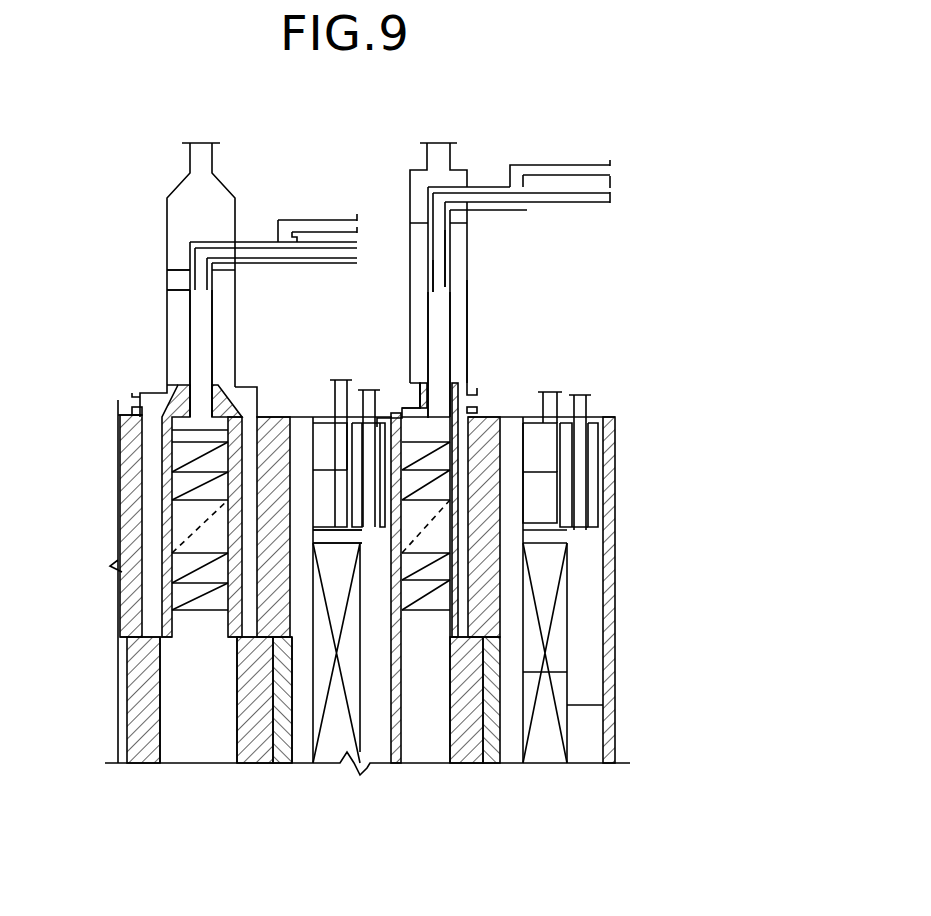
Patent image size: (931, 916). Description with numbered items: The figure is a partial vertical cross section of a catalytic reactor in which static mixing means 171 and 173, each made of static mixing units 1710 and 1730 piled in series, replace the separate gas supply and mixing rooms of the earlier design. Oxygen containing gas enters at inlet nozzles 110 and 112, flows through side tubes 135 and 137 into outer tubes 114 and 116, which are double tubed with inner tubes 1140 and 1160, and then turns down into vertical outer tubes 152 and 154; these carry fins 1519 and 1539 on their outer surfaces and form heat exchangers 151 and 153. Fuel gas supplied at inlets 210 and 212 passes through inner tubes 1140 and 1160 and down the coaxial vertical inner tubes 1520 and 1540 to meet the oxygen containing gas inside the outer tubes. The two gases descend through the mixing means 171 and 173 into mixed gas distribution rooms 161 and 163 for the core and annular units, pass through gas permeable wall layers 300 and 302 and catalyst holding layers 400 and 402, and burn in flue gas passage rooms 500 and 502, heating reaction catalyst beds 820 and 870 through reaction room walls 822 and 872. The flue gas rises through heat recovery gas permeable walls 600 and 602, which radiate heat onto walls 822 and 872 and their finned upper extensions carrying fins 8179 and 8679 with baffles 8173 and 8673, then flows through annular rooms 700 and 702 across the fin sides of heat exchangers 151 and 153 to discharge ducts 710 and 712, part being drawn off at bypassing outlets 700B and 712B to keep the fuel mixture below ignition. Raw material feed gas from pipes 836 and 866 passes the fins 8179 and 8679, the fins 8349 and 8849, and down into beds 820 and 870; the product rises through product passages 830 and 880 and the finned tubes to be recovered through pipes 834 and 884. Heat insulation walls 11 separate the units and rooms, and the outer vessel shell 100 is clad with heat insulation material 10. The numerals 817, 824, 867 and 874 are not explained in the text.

The heat insulation material 10 is at (607, 770).
The outer vessel shell 100 is at (607, 748).
The heat insulation walls 11 is at (152, 462).
The inlet nozzle 110 is at (358, 218).
The inlet nozzle 112 is at (612, 168).
The outer tube 114 is at (248, 242).
The outer tube 116 is at (477, 185).
The inner tube 1140 is at (263, 245).
The inner tube 1160 is at (497, 187).
The side tube 135 is at (322, 220).
The side tube 137 is at (560, 164).
The heat exchanger 151 is at (167, 296).
The vertical outer tube 152 is at (168, 284).
The fins 1519 is at (218, 320).
The vertical inner tube 1520 is at (190, 258).
The heat exchanger 153 is at (467, 293).
The vertical outer tube 154 is at (450, 277).
The fins 1539 is at (418, 320).
The vertical inner tube 1540 is at (445, 243).
The mixed gas distribution room 161 is at (216, 731).
The mixed gas distribution room 163 is at (428, 747).
The static mixing means 171 is at (205, 538).
The static mixing units 1710 is at (180, 462).
The static mixing means 173 is at (403, 612).
The static mixing units 1730 is at (440, 572).
The fuel gas inlet 210 is at (358, 244).
The fuel gas inlet 212 is at (612, 199).
The gas permeable wall layer 300 is at (253, 753).
The gas permeable wall layer 302 is at (468, 750).
The catalyst holding layer 400 is at (118, 720).
The catalyst holding layer 402 is at (492, 753).
The flue gas passage room 500 is at (303, 753).
The flue gas passage room 502 is at (513, 755).
The heat recovery gas permeable wall 600 is at (175, 618).
The heat recovery gas permeable wall 602 is at (490, 628).
The annular room 700 is at (121, 470).
The bypassing outlet 700B is at (130, 395).
The annular room 702 is at (442, 602).
The discharge duct 710 is at (173, 188).
The discharge duct 712 is at (418, 170).
The bypassing outlet 712B is at (423, 395).
The spring section 817 is at (205, 507).
The baffle 8173 is at (320, 468).
The fins 8179 is at (160, 545).
The reaction catalyst bed 820 is at (333, 743).
The reaction room wall 822 is at (313, 668).
The plate 824 is at (362, 692).
The product passage 830 is at (378, 747).
The product pipe 834 is at (377, 397).
The feed pipe 836 is at (340, 382).
The fins 8349 is at (357, 440).
The feed pipe 866 is at (553, 392).
The sleeve 867 is at (608, 442).
The baffle 8673 is at (541, 473).
The fins 8679 is at (542, 457).
The reaction catalyst bed 870 is at (550, 753).
The reaction room wall 872 is at (565, 670).
The plate 874 is at (603, 703).
The product passage 880 is at (587, 752).
The product pipe 884 is at (590, 403).
The fins 8849 is at (570, 503).